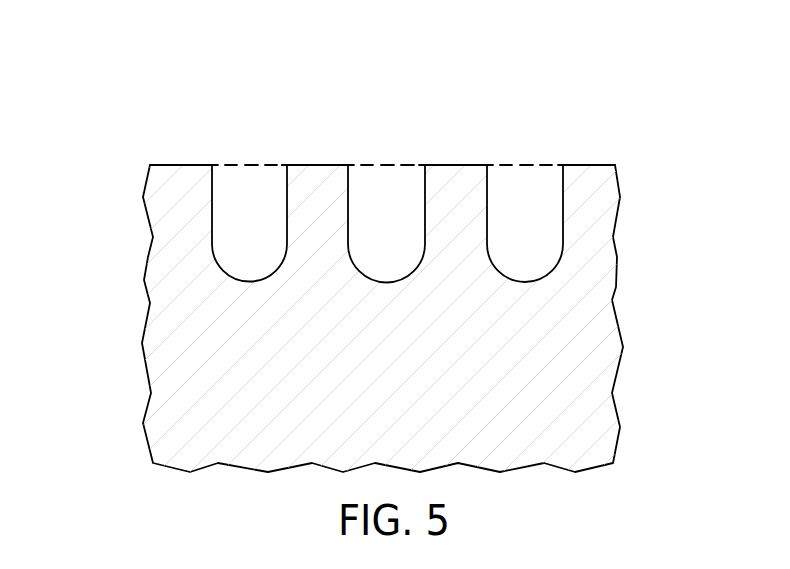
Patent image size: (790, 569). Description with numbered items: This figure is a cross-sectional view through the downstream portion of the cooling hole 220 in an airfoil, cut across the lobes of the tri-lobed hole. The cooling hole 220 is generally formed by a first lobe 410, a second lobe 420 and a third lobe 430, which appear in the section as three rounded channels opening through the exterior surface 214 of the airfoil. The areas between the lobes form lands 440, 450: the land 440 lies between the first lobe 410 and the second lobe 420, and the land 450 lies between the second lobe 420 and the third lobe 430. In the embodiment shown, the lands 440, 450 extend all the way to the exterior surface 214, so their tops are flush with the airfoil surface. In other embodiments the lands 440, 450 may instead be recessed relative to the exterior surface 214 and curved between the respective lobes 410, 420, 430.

The cooling hole 220 is at (128, 107).
The exterior surface 214 is at (190, 165).
The land 440 is at (318, 165).
The land 450 is at (455, 165).
The first lobe 410 is at (212, 244).
The second lobe 420 is at (387, 282).
The third lobe 430 is at (563, 244).